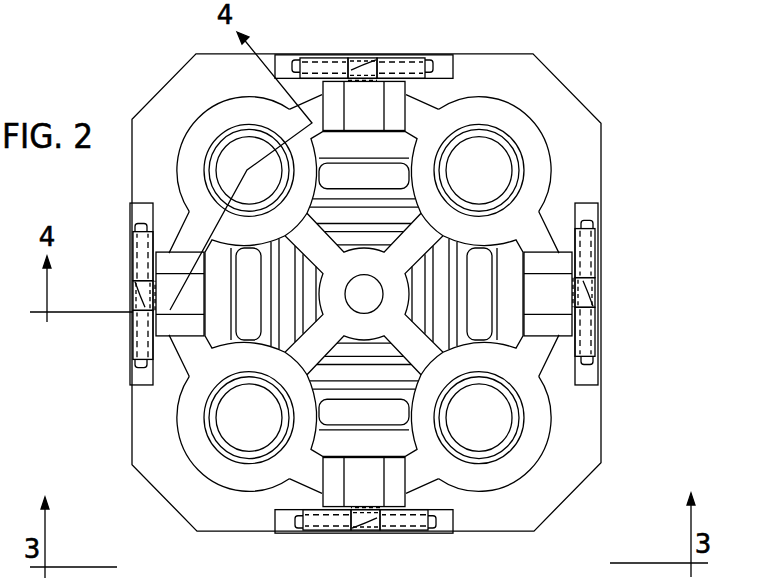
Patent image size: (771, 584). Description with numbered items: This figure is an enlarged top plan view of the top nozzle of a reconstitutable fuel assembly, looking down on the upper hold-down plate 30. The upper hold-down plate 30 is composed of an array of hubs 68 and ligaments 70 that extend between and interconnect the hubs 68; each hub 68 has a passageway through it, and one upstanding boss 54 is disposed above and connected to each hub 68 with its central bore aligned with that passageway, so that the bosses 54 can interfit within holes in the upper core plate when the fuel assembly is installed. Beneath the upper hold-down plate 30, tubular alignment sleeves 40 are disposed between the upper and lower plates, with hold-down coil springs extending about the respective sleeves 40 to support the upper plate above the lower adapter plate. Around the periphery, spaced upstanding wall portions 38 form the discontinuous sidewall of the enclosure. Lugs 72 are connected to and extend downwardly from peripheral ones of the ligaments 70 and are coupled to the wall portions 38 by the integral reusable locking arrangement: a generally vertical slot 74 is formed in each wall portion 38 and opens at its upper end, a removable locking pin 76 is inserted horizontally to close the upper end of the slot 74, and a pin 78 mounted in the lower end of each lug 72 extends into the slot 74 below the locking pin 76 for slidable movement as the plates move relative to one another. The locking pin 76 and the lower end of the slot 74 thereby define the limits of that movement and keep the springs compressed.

The upper hold-down plate 30 is at (538, 160).
The upstanding wall portions 38 is at (282, 56).
The tubular alignment sleeves 40 is at (225, 143).
The upstanding bosses 54 is at (203, 178).
The hubs 68 is at (207, 177).
The ligaments 70 is at (447, 112).
The lugs 72 is at (432, 108).
The vertical slot 74 is at (376, 100).
The removable locking pin 76 is at (371, 58).
The pin 78 is at (359, 56).